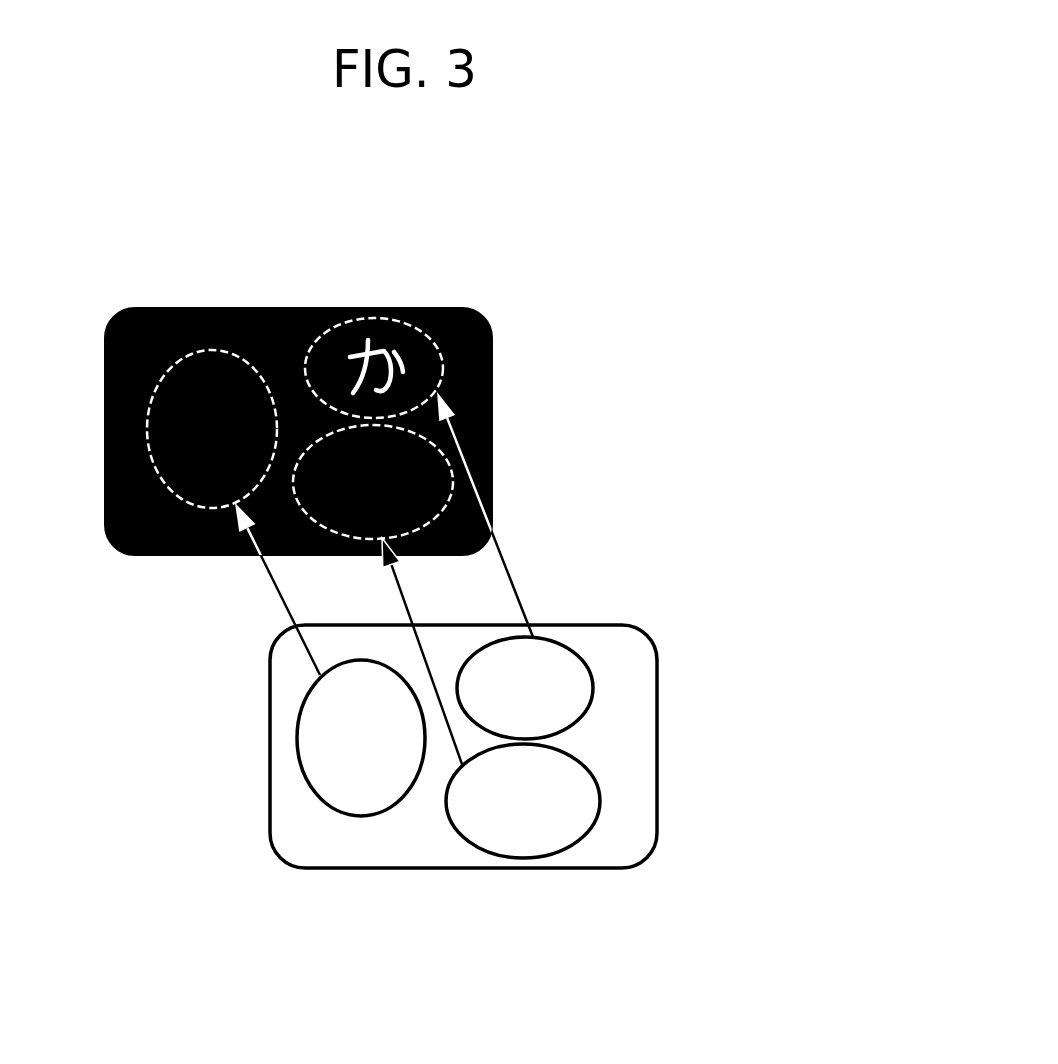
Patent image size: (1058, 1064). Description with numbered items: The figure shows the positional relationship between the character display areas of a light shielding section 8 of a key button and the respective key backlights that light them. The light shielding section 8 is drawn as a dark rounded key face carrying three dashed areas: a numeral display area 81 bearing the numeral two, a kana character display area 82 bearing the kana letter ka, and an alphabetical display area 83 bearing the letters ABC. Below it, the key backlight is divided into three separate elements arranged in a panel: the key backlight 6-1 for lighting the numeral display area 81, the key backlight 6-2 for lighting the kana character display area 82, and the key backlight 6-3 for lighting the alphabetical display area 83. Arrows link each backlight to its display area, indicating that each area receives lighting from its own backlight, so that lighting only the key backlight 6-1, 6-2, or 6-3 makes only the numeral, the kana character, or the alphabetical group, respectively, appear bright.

The light shielding section 8 is at (452, 322).
The numeral display area 81 is at (213, 351).
The kana character display area 82 is at (442, 363).
The alphabetical display area 83 is at (442, 475).
The key backlight for lighting numeral display area 6-1 is at (353, 815).
The key backlight for lighting kana display area 6-2 is at (593, 671).
The key backlight for lighting alphabet display area 6-3 is at (597, 800).